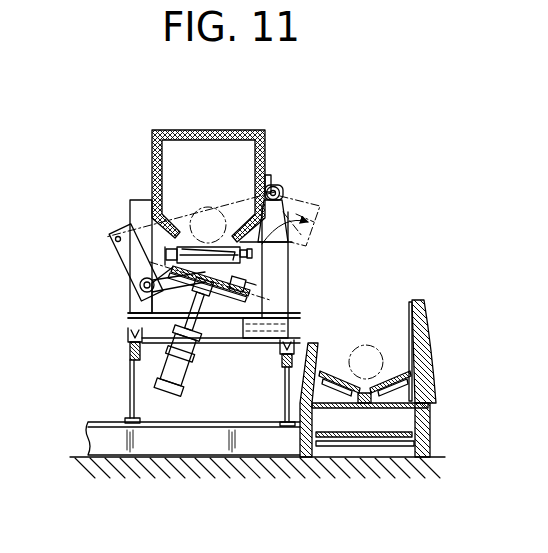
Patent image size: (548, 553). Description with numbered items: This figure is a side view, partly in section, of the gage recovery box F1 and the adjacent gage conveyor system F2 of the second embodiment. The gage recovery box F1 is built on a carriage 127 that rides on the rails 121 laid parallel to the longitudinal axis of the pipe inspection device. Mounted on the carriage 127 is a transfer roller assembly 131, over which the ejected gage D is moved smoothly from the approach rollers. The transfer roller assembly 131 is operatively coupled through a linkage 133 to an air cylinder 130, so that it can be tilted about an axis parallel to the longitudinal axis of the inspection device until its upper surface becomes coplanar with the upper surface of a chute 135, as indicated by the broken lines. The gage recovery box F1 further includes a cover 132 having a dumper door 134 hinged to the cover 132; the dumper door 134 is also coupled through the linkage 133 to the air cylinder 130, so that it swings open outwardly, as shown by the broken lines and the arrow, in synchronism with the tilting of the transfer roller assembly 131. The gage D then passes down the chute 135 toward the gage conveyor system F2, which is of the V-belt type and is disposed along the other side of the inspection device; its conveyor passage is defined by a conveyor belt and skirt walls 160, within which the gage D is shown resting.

The rails 121 is at (127, 357).
The carriage 127 is at (128, 315).
The air cylinder 130 is at (180, 372).
The transfer roller assembly 131 is at (248, 258).
The cover 132 is at (233, 130).
The linkage 133 is at (127, 263).
The dumper door 134 is at (270, 243).
The chute 135 is at (327, 322).
The skirt walls 160 is at (322, 368).
The gage D is at (205, 223).
The gage recovery box F1 is at (272, 156).
The gage conveyor system F2 is at (438, 386).